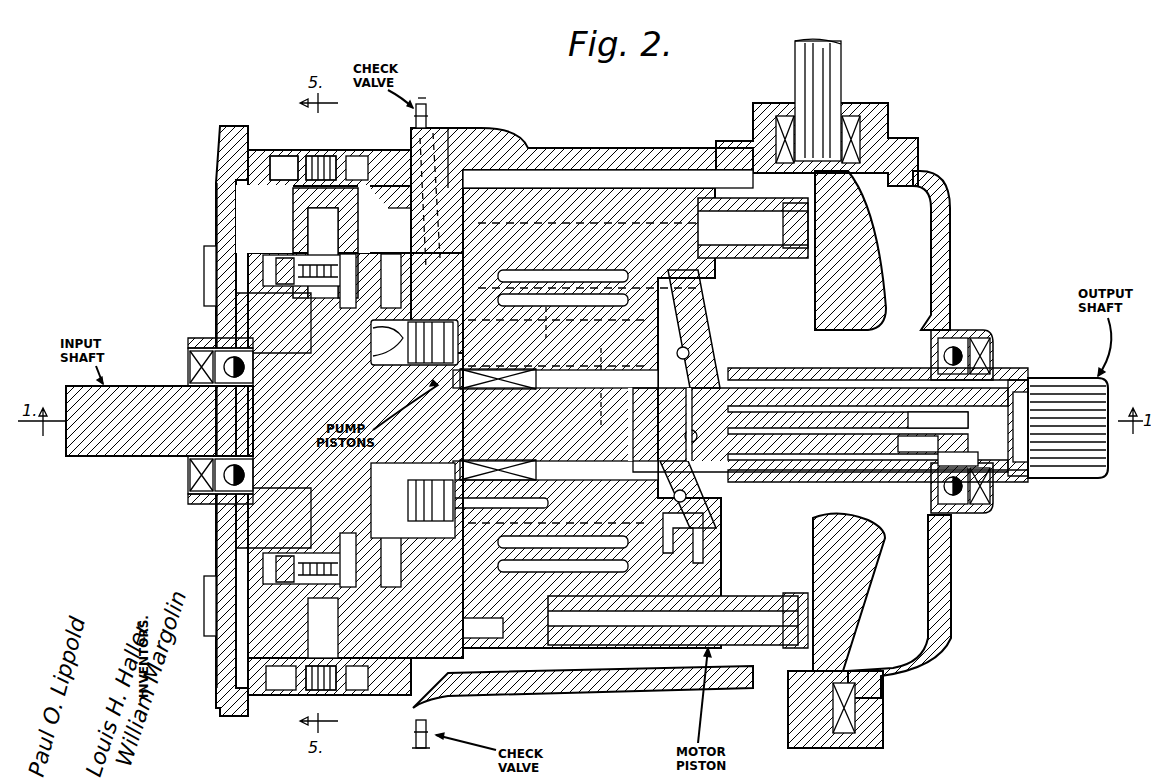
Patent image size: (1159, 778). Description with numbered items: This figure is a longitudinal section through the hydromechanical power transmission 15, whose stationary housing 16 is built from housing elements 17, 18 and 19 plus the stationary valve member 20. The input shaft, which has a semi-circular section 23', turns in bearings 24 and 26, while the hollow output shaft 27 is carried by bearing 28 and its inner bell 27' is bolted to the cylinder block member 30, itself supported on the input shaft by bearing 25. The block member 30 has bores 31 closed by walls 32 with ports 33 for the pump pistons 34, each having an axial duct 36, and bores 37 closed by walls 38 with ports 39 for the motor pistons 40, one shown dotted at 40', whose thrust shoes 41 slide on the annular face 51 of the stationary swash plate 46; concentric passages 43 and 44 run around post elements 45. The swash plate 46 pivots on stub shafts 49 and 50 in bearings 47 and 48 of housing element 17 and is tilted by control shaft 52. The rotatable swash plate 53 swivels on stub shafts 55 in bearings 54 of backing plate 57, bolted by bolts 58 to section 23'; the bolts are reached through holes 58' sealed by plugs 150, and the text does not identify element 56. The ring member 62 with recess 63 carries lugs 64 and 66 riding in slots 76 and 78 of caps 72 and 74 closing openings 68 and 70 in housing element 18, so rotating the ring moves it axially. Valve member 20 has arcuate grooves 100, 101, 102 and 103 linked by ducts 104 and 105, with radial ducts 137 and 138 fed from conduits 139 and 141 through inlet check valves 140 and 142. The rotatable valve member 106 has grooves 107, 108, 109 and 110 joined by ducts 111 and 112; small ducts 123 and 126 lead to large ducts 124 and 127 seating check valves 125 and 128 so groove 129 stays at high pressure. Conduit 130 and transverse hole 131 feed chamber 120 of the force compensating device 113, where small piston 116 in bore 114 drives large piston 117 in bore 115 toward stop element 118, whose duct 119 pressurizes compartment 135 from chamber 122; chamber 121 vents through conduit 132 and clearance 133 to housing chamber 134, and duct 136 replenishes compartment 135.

The hydromechanical power transmission 15 is at (921, 128).
The stationary housing 16 is at (595, 137).
The housing element 17 is at (652, 142).
The housing element 18 is at (222, 118).
The housing element 19 is at (210, 180).
The stationary valve member 20 is at (470, 140).
The semi-circular section of the input shaft 23' is at (579, 393).
The bearing 24 is at (204, 338).
The bearing 25 is at (428, 375).
The bearing 26 is at (990, 360).
The output shaft 27 is at (1073, 445).
The bell of the output shaft 27' is at (741, 565).
The bearing 28 is at (950, 335).
The multipiston cylinder block member 30 is at (534, 174).
The longitudinally extending bores 31 is at (585, 528).
The wall 32 is at (645, 508).
The fluid port 33 is at (655, 524).
The pump piston 34 is at (445, 470).
The axial fluid duct 36 is at (470, 490).
The longitudinally extending bores 37 is at (525, 690).
The wall 38 is at (470, 625).
The fluid port 39 is at (492, 610).
The motor piston 40 is at (579, 393).
The motor piston 40' is at (570, 217).
The thrust shoe 41 is at (788, 200).
The circular fluid passage 43 is at (565, 300).
The circular fluid passage 44 is at (558, 268).
The post elements 45 is at (522, 635).
The stationary swash plate 46 is at (876, 250).
The bearing 47 is at (848, 110).
The bearing 48 is at (855, 705).
The stub shaft 49 is at (785, 110).
The stub shaft 50 is at (795, 740).
The annular face 51 is at (792, 273).
The control shaft 52 is at (833, 50).
The rotatable swash plate 53 is at (414, 429).
The transverse bearing 54 is at (419, 425).
The stub shaft 55 is at (362, 250).
The passage 56 is at (375, 360).
The backing plate 57 is at (320, 257).
The bolts 58 is at (579, 393).
The holes 58' is at (194, 425).
The ring member 62 is at (352, 206).
The annular groove 63 is at (262, 640).
The projecting lug 64 is at (300, 150).
The projecting lug 66 is at (318, 683).
The opening 68 is at (362, 142).
The opening 70 is at (380, 672).
The cap 72 is at (386, 162).
The cap 74 is at (275, 690).
The slot 76 is at (320, 148).
The slot 78 is at (312, 658).
The arcuate groove 100 is at (466, 243).
The arcuate groove 101 is at (455, 305).
The arcuate groove 102 is at (476, 670).
The arcuate groove 103 is at (513, 670).
The duct 104 is at (458, 182).
The duct 105 is at (395, 600).
The rotatable valve member 106 is at (714, 376).
The arcuate groove 107 is at (794, 298).
The arcuate groove 108 is at (700, 265).
The arcuate groove 109 is at (722, 524).
The arcuate groove 110 is at (728, 583).
The duct 111 is at (692, 288).
The duct 112 is at (718, 541).
The force compensating device 113 is at (958, 459).
The small axial bore 114 is at (938, 420).
The large bore 115 is at (935, 385).
The small piston 116 is at (910, 470).
The large piston 117 is at (982, 480).
The stop element 118 is at (1012, 372).
The longitudinal duct 119 is at (1050, 372).
The chamber 120 is at (930, 400).
The chamber 121 is at (940, 465).
The chamber 122 is at (1010, 470).
The small duct 123 is at (696, 302).
The large duct 124 is at (685, 345).
The one-way ball-type check valve 125 is at (695, 318).
The second small duct 126 is at (680, 490).
The second large duct 127 is at (700, 470).
The one-way ball-type check valve 128 is at (738, 500).
The circumferential groove 129 is at (688, 412).
The high pressure fluid conduit 130 is at (836, 508).
The transverse hole 131 is at (677, 428).
The second longitudinal conduit 132 is at (825, 365).
The clearance 133 is at (570, 382).
The housing chamber 134 is at (652, 682).
The fluid filled compartment 135 is at (1000, 378).
The transversely disposed duct 136 is at (918, 444).
The radial duct 137 is at (452, 125).
The radial duct 138 is at (405, 638).
The external conduit 139 is at (417, 95).
The one-way inlet check valve 140 is at (425, 100).
The conduit 141 is at (408, 735).
The one-way inlet check valve 142 is at (425, 728).
The plugs 150 is at (196, 256).